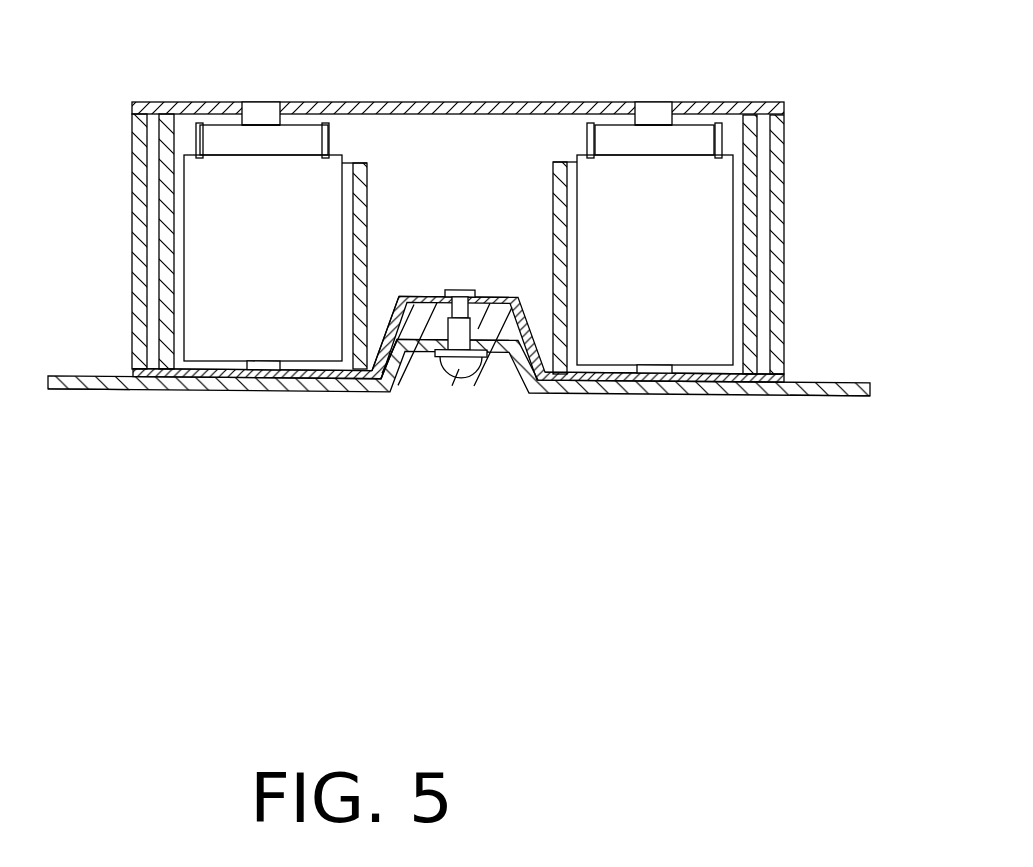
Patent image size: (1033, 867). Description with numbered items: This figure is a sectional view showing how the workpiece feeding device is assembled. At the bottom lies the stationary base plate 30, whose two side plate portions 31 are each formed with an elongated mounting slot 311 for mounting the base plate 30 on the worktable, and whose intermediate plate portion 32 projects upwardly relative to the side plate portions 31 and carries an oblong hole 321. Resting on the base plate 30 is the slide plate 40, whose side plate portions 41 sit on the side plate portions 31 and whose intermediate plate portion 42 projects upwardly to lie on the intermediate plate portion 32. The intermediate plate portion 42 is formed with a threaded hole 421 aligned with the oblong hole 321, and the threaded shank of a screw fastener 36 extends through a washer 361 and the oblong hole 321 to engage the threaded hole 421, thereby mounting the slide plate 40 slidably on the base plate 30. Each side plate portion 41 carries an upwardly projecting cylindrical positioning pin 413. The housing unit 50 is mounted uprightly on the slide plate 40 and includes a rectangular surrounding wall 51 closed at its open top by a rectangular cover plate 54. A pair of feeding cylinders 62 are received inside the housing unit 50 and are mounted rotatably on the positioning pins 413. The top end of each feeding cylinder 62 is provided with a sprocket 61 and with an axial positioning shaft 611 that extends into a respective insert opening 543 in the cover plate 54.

The stationary base plate 30 is at (778, 398).
The side plate portion 31 is at (187, 392).
The elongated mounting slot 311 is at (98, 392).
The intermediate plate portion 32 is at (515, 348).
The oblong hole 321 is at (425, 357).
The screw fastener 36 is at (460, 372).
The washer 361 is at (442, 362).
The slide plate 40 is at (290, 390).
The side plate portion 41 is at (330, 372).
The cylindrical positioning pin 413 is at (257, 372).
The intermediate plate portion 42 is at (495, 302).
The threaded hole 421 is at (398, 318).
The housing unit 50 is at (788, 176).
The rectangular surrounding wall 51 is at (786, 245).
The rectangular cover plate 54 is at (395, 107).
The insert opening 543 is at (627, 118).
The sprocket 61 is at (295, 143).
The axial positioning shaft 611 is at (650, 115).
The feeding cylinder 62 is at (205, 262).